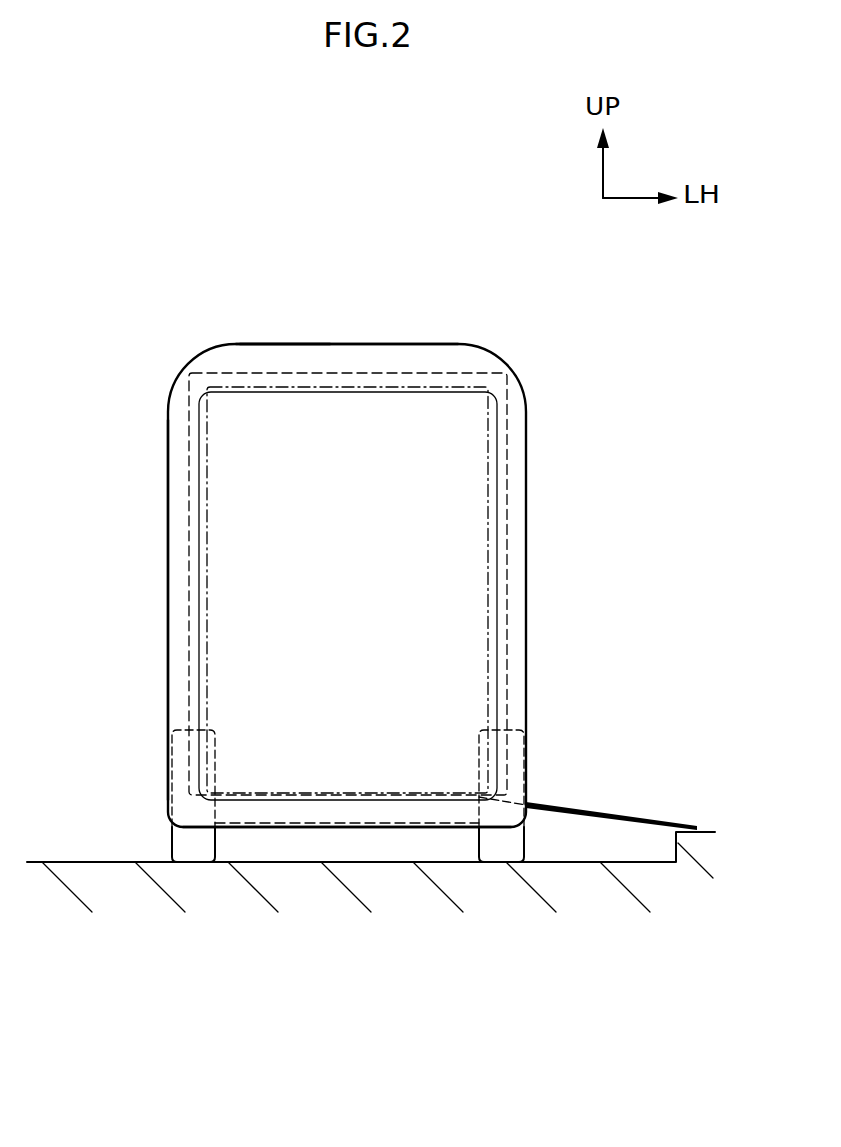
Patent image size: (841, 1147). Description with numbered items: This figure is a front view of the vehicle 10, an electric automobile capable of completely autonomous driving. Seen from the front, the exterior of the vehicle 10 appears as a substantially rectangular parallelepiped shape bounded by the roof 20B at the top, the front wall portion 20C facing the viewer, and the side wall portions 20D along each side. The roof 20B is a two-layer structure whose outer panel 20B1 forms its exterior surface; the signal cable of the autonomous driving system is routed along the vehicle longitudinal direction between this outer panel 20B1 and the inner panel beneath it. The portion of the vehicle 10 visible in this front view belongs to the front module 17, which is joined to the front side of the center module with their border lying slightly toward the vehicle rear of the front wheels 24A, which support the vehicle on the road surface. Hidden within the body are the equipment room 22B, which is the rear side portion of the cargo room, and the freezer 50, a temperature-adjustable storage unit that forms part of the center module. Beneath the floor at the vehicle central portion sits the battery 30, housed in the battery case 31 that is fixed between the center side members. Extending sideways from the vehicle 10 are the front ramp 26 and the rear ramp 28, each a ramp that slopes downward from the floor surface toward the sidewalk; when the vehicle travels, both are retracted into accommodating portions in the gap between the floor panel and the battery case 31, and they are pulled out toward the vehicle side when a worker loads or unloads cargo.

The vehicle 10 is at (396, 492).
The front module 17 is at (517, 484).
The roof 20B is at (360, 228).
The outer panel 20B1 is at (253, 343).
The front wall portion 20C is at (217, 457).
The side wall portions 20D is at (167, 522).
The equipment room 22B is at (444, 380).
The front wheels 24A is at (193, 843).
The front ramp 26 is at (638, 817).
The rear ramp 28 is at (580, 808).
The battery 30 is at (408, 823).
The battery case 31 is at (320, 835).
The freezer 50 is at (488, 548).